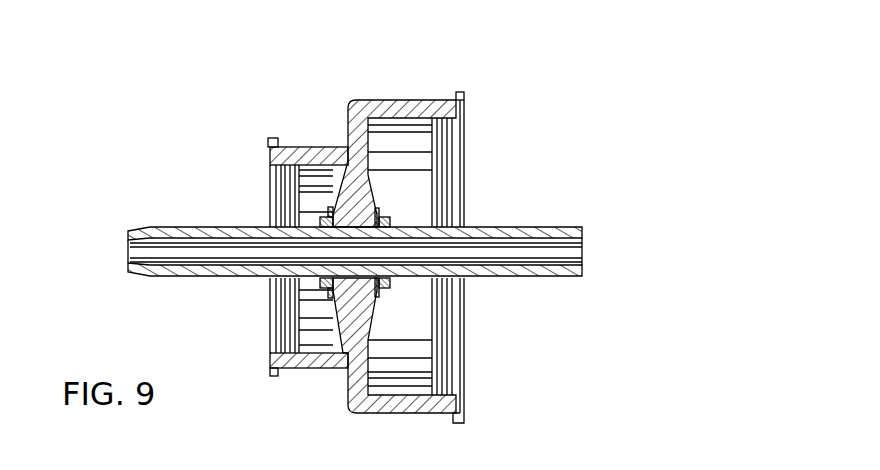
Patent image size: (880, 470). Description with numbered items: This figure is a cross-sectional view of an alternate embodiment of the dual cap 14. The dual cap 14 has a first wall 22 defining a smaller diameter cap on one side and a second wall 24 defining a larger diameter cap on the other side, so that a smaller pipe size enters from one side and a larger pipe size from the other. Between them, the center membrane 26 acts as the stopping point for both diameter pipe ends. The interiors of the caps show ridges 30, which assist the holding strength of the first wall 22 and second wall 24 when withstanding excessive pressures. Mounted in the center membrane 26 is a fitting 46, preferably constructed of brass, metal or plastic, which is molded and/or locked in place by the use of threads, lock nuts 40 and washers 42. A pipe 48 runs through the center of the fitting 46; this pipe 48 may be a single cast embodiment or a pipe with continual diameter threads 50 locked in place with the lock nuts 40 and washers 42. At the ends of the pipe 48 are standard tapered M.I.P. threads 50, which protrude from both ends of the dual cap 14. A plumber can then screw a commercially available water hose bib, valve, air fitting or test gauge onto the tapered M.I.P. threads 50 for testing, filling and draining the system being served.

The dual cap 14 is at (472, 84).
The first wall 22 is at (288, 147).
The second wall 24 is at (378, 100).
The center membrane 26 is at (345, 164).
The ridges 30 is at (282, 207).
The lock nuts 40 is at (382, 213).
The washers 42 is at (380, 290).
The fitting 46 is at (529, 191).
The pipe 48 is at (490, 278).
The tapered M.I.P. threads 50 is at (535, 278).